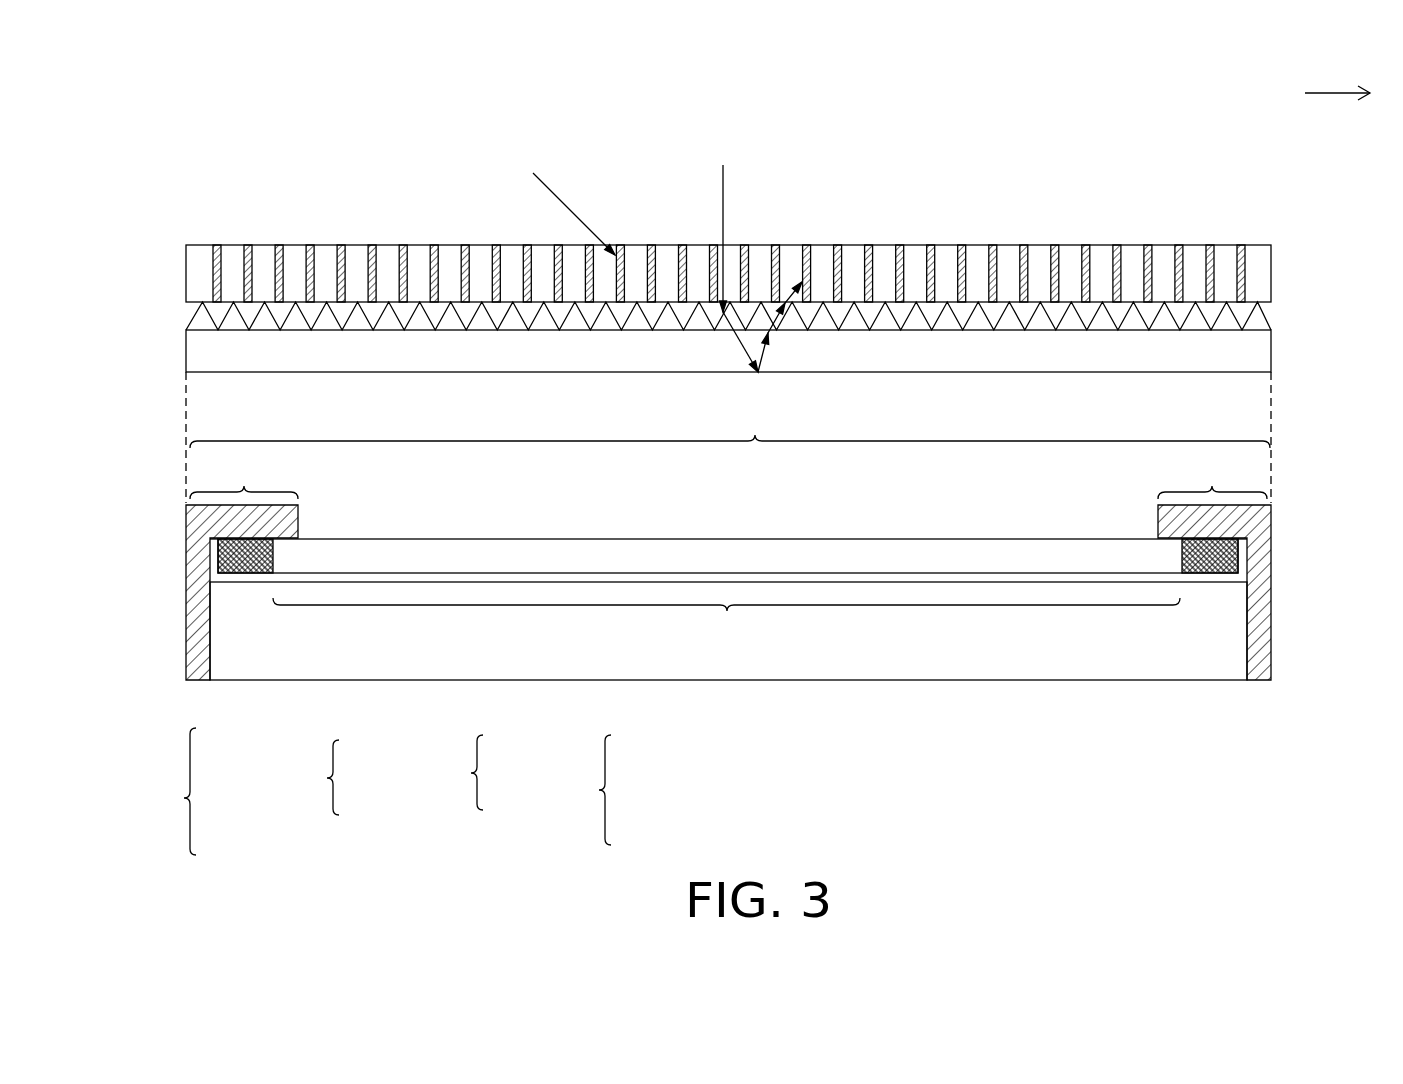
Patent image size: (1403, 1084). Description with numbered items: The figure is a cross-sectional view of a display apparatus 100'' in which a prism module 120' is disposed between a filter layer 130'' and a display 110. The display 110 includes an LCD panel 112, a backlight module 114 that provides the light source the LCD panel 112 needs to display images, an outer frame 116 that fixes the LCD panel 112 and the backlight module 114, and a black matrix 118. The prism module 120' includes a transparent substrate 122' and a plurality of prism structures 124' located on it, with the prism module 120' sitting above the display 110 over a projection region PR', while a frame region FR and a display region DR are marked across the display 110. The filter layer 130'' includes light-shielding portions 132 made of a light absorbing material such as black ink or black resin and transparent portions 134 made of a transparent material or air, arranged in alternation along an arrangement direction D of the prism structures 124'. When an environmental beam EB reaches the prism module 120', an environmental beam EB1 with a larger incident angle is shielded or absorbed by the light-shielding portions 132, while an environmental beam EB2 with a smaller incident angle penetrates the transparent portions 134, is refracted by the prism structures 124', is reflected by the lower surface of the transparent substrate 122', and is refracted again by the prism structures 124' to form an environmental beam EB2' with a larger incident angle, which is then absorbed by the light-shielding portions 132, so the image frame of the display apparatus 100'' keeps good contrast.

The display apparatus 100'' is at (1341, 740).
The display 110 is at (189, 794).
The LCD panel 112 is at (1170, 556).
The backlight module 114 is at (1233, 655).
The outer frame 116 is at (197, 617).
The black matrix 118 is at (228, 555).
The prism module 120' is at (335, 777).
The transparent substrate 122' is at (772, 351).
The prism structures 124' is at (772, 306).
The filter layer 130'' is at (472, 773).
The light-shielding portions 132 is at (1242, 247).
The transparent portions 134 is at (1257, 252).
The environmental beam EB is at (615, 790).
The environmental beam with a larger incident angle EB1 is at (563, 200).
The environmental beam with a smaller incident angle EB2 is at (730, 241).
The environmental beam with a larger incident angle formed by refraction EB2' is at (790, 271).
The projection region PR' is at (730, 422).
The frame region FR is at (728, 474).
The display region DR is at (726, 625).
The arrangement direction D is at (1349, 93).